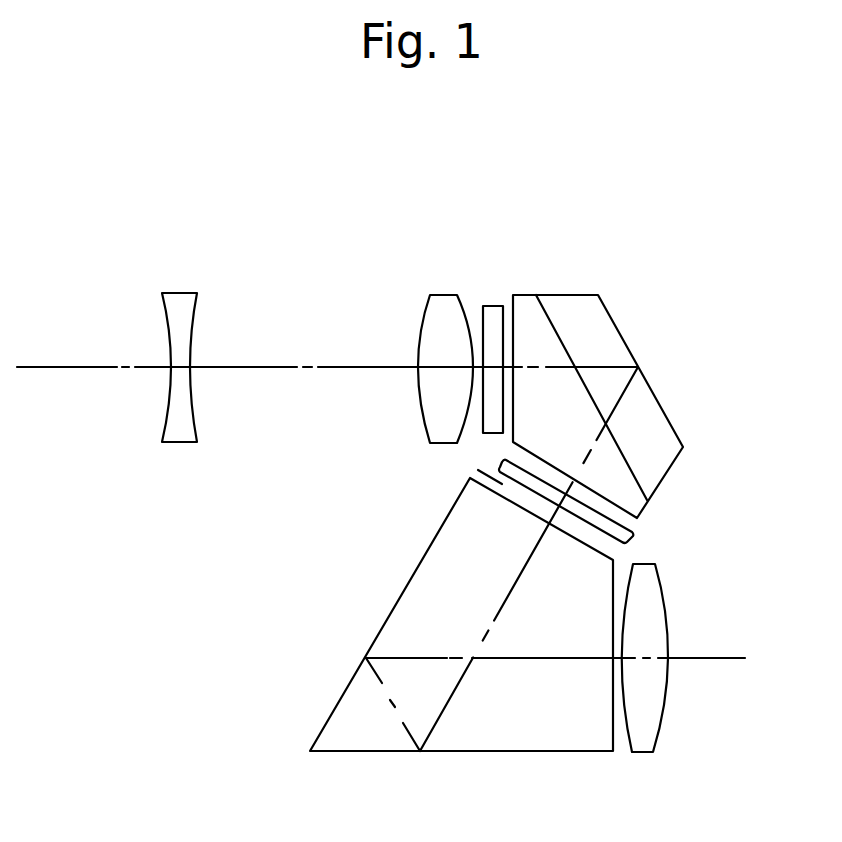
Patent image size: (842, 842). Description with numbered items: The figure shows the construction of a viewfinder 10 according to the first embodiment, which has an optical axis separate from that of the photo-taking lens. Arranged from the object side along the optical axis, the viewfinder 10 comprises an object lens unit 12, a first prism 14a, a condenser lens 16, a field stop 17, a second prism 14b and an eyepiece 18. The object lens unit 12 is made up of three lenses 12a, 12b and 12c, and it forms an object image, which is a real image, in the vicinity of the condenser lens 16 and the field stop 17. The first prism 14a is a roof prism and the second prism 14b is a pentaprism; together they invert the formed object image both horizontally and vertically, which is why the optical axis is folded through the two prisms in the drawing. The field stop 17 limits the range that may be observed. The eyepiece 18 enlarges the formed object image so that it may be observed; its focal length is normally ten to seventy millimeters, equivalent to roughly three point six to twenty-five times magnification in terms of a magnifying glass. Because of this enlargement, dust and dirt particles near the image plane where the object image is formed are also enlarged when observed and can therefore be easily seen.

The viewfinder 10 is at (660, 256).
The object lens unit 12 is at (492, 230).
The lens 12a is at (178, 292).
The lens 12b is at (447, 295).
The lens 12c is at (497, 305).
The first prism 14a is at (562, 295).
The second prism 14b is at (512, 753).
The condenser lens 16 is at (627, 538).
The field stop 17 is at (597, 542).
The eyepiece 18 is at (642, 753).